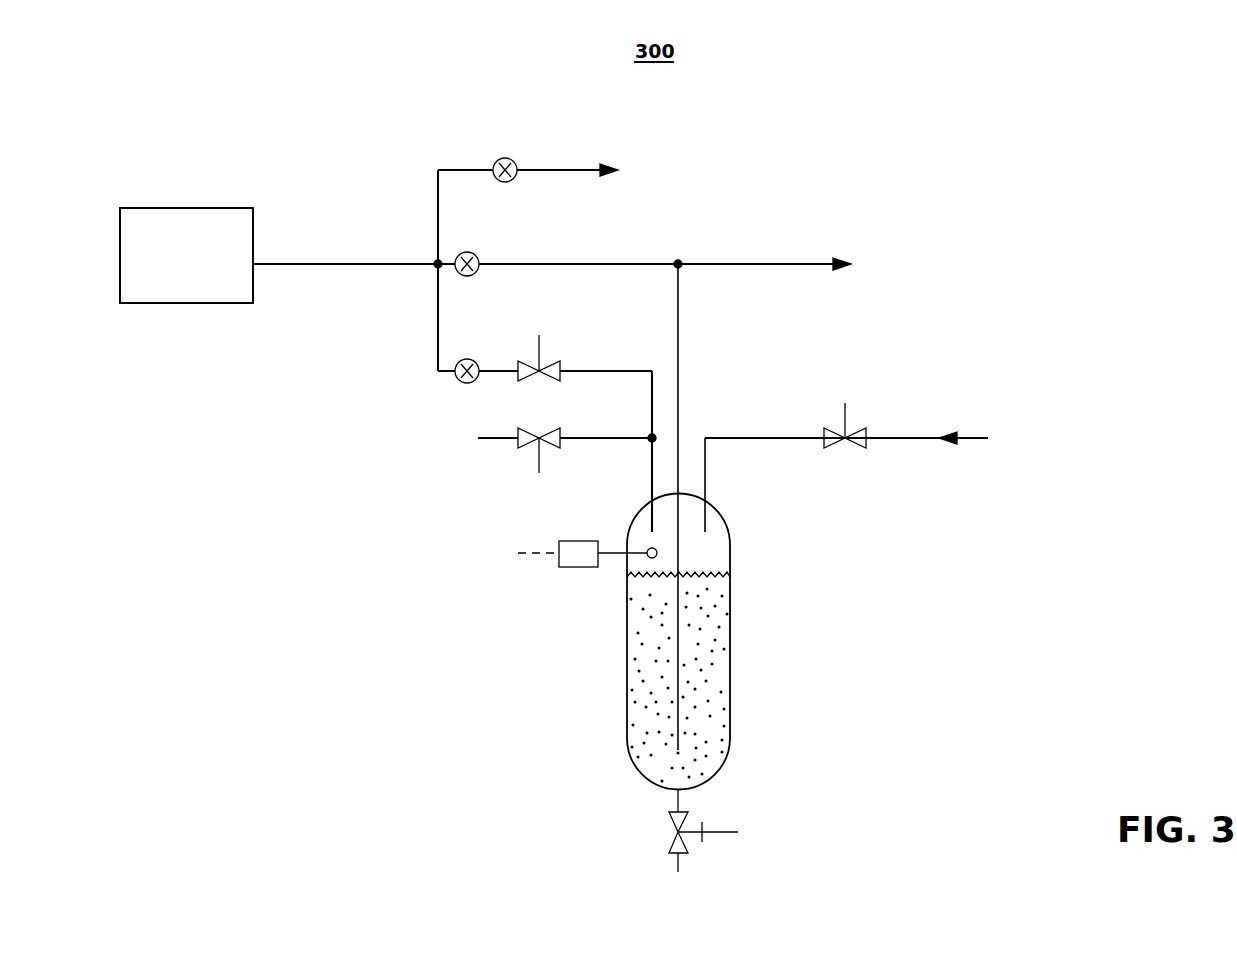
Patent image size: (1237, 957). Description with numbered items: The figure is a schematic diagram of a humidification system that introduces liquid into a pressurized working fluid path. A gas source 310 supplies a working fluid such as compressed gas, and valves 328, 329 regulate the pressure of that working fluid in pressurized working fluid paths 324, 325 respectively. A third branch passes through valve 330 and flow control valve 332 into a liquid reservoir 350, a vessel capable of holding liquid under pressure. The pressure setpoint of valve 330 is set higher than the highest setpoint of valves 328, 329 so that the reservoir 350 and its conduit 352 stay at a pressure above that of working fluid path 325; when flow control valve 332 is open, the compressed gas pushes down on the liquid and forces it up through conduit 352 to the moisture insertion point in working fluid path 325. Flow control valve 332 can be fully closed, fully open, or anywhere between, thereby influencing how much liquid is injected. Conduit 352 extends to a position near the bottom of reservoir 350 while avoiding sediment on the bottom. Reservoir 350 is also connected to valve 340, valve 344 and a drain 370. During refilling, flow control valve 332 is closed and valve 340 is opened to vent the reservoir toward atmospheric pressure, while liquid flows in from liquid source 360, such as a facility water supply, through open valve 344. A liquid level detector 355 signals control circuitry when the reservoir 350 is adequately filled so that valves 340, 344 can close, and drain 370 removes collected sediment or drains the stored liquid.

The gas source 310 is at (185, 208).
The pressurized working fluid path 324 is at (576, 170).
The pressurized working fluid path 325 is at (760, 264).
The valve 328 is at (515, 161).
The valve 329 is at (477, 255).
The valve 330 is at (476, 361).
The flow control valve 332 is at (541, 343).
The valve 340 is at (541, 455).
The valve 344 is at (847, 412).
The liquid reservoir 350 is at (731, 645).
The conduit 352 is at (679, 338).
The liquid level detector 355 is at (579, 568).
The liquid source 360 is at (986, 438).
The drain 370 is at (723, 832).